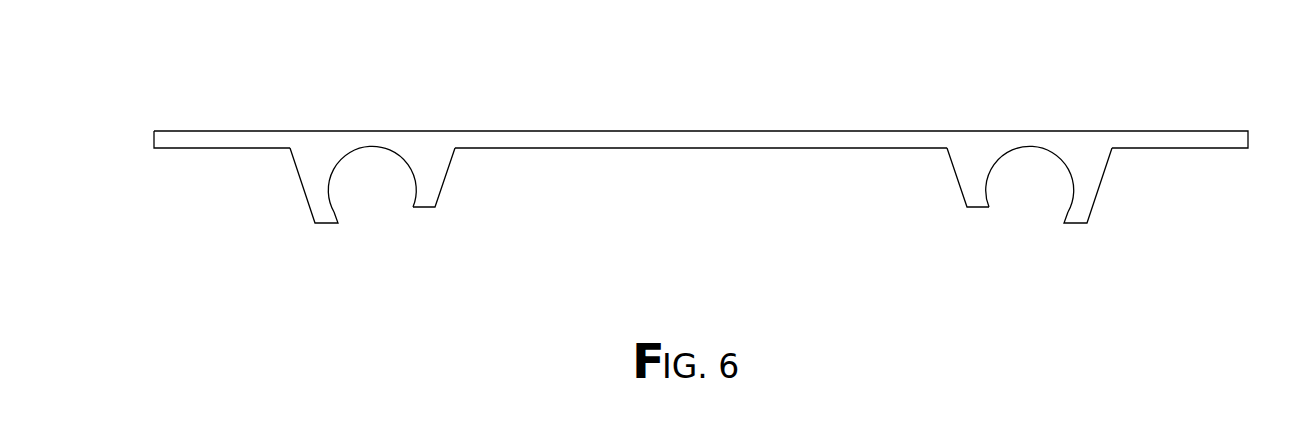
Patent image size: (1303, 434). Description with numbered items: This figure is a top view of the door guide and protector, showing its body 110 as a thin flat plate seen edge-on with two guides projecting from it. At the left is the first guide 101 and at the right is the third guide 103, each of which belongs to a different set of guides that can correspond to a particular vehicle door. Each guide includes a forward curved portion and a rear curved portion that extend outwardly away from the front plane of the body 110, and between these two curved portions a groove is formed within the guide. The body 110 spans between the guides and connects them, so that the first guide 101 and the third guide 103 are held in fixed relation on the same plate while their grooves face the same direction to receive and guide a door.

The first guide 101 is at (307, 120).
The third guide 103 is at (1083, 113).
The body 110 is at (818, 131).